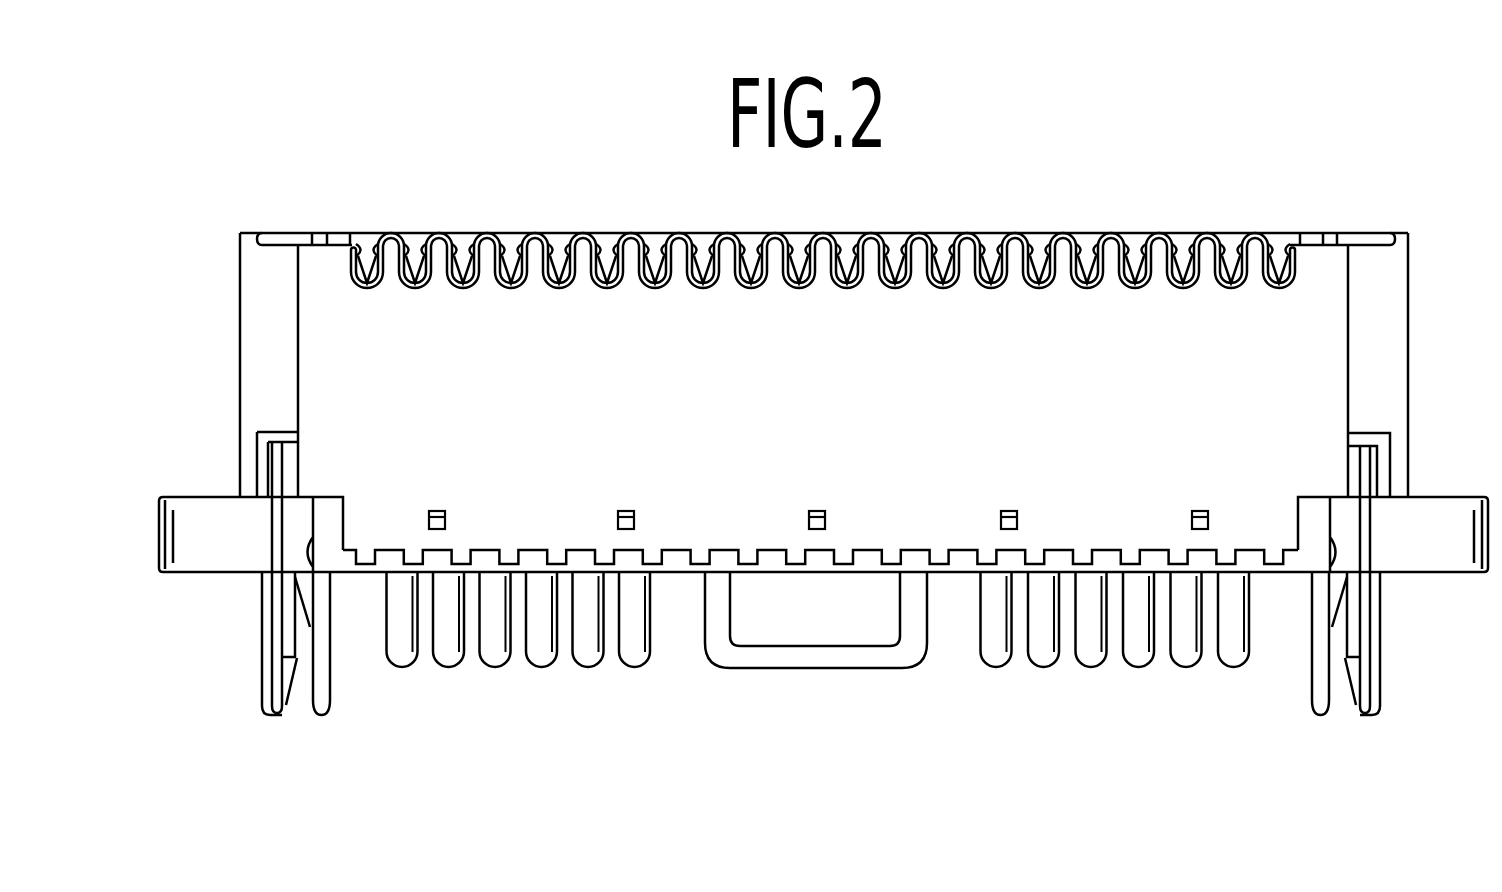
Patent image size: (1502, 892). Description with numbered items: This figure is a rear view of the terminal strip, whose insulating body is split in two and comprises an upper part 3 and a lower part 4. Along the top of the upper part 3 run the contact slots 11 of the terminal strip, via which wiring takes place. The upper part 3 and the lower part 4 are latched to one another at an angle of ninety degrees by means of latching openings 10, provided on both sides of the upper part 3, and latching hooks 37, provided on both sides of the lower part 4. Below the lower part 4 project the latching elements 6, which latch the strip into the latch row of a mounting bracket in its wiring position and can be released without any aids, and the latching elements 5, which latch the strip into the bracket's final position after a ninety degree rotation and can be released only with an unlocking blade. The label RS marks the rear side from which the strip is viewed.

The upper part 3 is at (1392, 260).
The lower part 4 is at (1457, 508).
The latching element 5 is at (287, 680).
The latching element 6 is at (290, 466).
The latching opening 10 is at (818, 605).
The latching hook 37 is at (1003, 534).
The contact slot 11 is at (845, 256).
The mating side direction RS is at (1185, 160).